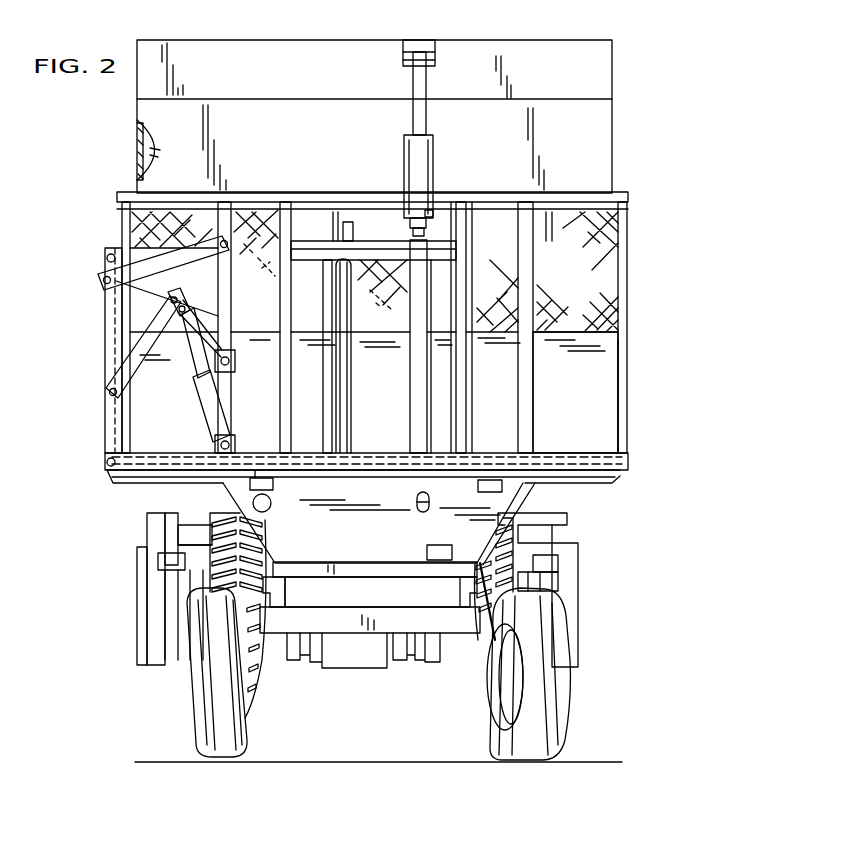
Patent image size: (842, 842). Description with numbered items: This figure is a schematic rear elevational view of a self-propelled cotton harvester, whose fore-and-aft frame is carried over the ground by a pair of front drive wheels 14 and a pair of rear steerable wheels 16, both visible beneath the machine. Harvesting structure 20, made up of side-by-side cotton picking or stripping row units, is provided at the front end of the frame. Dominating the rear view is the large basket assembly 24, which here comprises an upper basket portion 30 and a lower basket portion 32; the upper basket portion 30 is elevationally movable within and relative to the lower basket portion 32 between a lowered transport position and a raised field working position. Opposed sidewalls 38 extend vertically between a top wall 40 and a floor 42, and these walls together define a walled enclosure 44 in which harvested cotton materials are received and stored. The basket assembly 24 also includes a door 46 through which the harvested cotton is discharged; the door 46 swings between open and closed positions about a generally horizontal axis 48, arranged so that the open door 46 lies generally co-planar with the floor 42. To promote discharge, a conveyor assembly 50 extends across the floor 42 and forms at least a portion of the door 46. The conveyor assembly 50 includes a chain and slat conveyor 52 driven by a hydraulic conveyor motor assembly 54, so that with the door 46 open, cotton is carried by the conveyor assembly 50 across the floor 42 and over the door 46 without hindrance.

The front drive wheels 14 is at (255, 703).
The rear steerable wheels 16 is at (192, 712).
The harvesting structure 20 is at (115, 657).
The basket assembly 24 is at (637, 242).
The upper basket portion 30 is at (618, 120).
The lower basket portion 32 is at (636, 404).
The sidewalls 38 is at (122, 214).
The top wall 40 is at (555, 40).
The floor 42 is at (575, 440).
The walled enclosure 44 is at (137, 160).
The door 46 is at (105, 333).
The horizontal axis 48 is at (107, 462).
The conveyor assembly 50 is at (105, 433).
The chain and slat conveyor 52 is at (377, 440).
The hydraulic conveyor motor assembly 54 is at (645, 482).